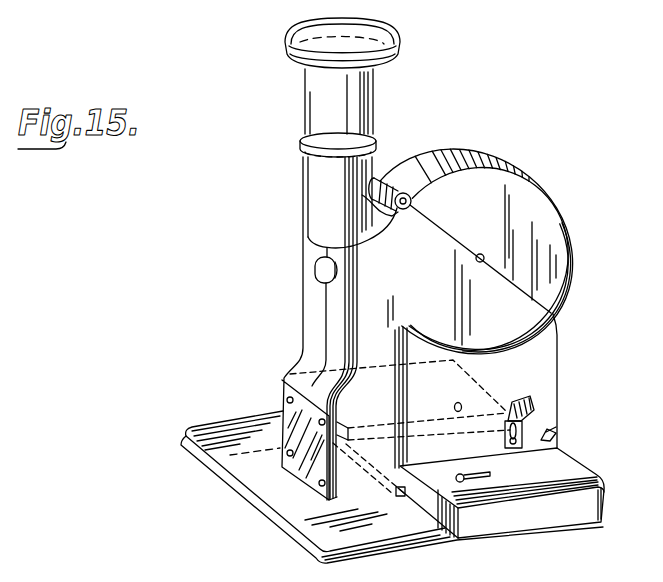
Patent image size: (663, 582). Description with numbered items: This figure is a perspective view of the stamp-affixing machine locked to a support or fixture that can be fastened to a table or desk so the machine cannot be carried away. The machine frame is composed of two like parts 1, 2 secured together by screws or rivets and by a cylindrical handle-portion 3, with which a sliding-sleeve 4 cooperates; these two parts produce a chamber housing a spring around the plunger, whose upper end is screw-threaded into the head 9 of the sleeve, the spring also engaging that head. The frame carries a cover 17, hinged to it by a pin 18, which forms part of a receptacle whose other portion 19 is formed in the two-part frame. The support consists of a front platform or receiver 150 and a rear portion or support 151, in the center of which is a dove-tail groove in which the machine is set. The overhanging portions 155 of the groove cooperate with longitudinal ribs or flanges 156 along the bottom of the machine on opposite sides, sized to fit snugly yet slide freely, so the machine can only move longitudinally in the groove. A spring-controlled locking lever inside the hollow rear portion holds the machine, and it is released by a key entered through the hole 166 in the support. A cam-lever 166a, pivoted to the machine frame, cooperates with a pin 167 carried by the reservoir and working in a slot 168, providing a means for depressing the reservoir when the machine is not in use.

The frame part 1 is at (332, 342).
The frame part 2 is at (313, 305).
The cylindrical handle-portion 3 is at (313, 190).
The sliding-sleeve 4 is at (372, 110).
The head 9 is at (400, 42).
The cover 17 is at (571, 229).
The pin 18 is at (403, 209).
The receptacle portion 19 is at (478, 259).
The front platform 150 is at (258, 508).
The rear portion 151 is at (501, 493).
The overhanging portions 155 is at (438, 422).
The longitudinal ribs or flanges 156 is at (397, 496).
The hole 166 is at (490, 472).
The cam-lever 166a is at (528, 415).
The pin 167 is at (553, 438).
The slot 168 is at (548, 432).